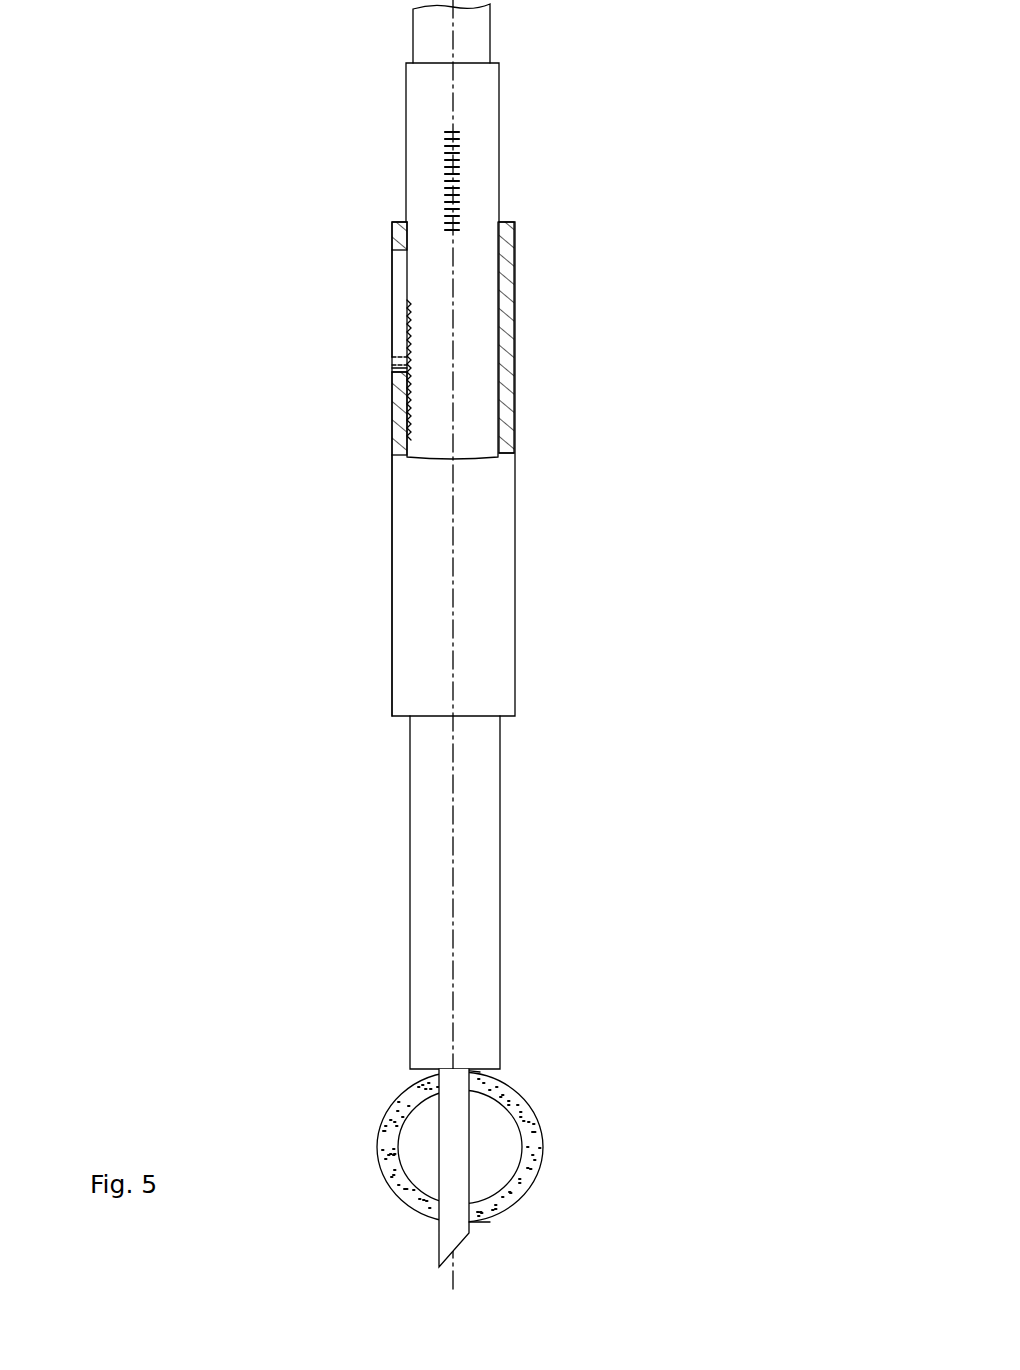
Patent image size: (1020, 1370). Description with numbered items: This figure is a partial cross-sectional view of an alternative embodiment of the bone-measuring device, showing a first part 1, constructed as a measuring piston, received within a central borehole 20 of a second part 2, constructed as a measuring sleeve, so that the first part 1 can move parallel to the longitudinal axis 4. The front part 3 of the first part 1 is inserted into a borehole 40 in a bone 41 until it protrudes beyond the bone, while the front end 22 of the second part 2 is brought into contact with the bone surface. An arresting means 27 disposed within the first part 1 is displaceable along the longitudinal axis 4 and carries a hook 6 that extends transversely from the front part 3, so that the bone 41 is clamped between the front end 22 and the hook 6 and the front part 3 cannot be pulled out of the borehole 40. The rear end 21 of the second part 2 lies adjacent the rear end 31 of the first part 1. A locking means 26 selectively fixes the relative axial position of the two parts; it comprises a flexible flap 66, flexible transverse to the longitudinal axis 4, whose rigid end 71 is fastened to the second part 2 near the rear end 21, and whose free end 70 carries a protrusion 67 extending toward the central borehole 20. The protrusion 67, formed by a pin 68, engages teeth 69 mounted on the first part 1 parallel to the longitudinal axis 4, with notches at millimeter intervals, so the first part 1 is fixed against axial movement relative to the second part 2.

The first part 1 is at (477, 375).
The second part 2 is at (500, 695).
The front part 3 is at (447, 1180).
The longitudinal axis 4 is at (453, 960).
The hook 6 is at (480, 1225).
The central borehole 20 is at (512, 437).
The rear end 21 is at (515, 237).
The front end 22 is at (420, 1057).
The locking means 26 is at (395, 385).
The arresting means 27 is at (507, 26).
The rear end 31 is at (486, 78).
The borehole 40 is at (475, 1078).
The bone 41 is at (530, 1130).
The flexible flap 66 is at (397, 280).
The protrusion 67 is at (405, 360).
The pin 68 is at (395, 358).
The teeth 69 is at (395, 428).
The free end 70 is at (392, 368).
The rigid end 71 is at (397, 250).